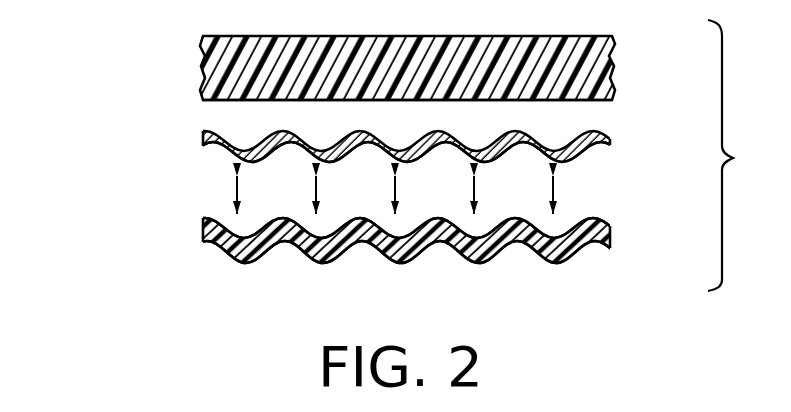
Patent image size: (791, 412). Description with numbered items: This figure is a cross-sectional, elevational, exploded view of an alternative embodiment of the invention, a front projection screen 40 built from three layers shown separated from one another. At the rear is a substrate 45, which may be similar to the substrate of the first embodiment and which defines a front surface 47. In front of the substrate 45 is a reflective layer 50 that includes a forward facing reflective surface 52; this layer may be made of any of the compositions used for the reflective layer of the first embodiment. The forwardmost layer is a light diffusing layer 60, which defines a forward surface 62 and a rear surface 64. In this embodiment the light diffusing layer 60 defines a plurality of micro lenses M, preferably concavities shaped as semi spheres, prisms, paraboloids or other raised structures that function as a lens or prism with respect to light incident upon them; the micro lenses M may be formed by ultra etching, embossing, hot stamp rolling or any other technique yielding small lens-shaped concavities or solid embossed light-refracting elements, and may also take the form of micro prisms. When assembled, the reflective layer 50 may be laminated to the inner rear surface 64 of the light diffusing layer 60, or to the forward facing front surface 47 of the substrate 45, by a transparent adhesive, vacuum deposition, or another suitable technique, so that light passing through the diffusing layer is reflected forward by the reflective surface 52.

The front projection screen 40 is at (124, 71).
The substrate 45 is at (604, 53).
The front surface 47 is at (567, 100).
The reflective layer 50 is at (201, 131).
The forward facing reflective surface 52 is at (231, 162).
The light diffusing layer 60 is at (610, 235).
The rear surface 64 is at (573, 219).
The forward surface 62 is at (569, 261).
The micro lenses M is at (322, 265).